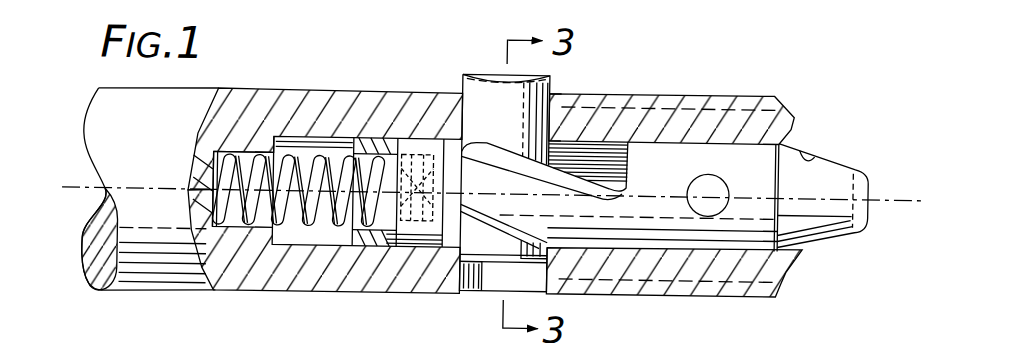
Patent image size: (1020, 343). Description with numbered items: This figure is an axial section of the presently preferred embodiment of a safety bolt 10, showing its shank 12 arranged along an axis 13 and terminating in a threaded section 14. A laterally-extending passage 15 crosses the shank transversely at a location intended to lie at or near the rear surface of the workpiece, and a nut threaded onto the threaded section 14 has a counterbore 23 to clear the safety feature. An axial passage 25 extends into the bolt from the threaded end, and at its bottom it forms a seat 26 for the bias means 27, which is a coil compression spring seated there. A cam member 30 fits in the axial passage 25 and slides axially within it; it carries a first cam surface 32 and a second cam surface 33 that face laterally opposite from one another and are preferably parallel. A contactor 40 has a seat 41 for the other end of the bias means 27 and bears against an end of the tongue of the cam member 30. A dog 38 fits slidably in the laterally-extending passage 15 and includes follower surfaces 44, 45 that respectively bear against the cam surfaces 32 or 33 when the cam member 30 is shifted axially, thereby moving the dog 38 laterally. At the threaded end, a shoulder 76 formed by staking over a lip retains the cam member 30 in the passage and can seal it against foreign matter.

The safety bolt 10 is at (373, 83).
The shank 12 is at (193, 296).
The axis 13 is at (915, 193).
The threaded section 14 is at (682, 93).
The laterally-extending passage 15 is at (463, 140).
The counterbore 23 is at (193, 157).
The axial passage 25 is at (321, 146).
The seat 26 is at (222, 296).
The bias means 27 is at (293, 296).
The cam member 30 is at (833, 146).
The first cam surface 32 is at (558, 110).
The second cam surface 33 is at (505, 233).
The dog 38 is at (548, 80).
The contactor 40 is at (401, 292).
The seat 41 is at (430, 251).
The follower surface 44 is at (483, 150).
The follower surface 45 is at (557, 233).
The shoulder 76 is at (798, 148).